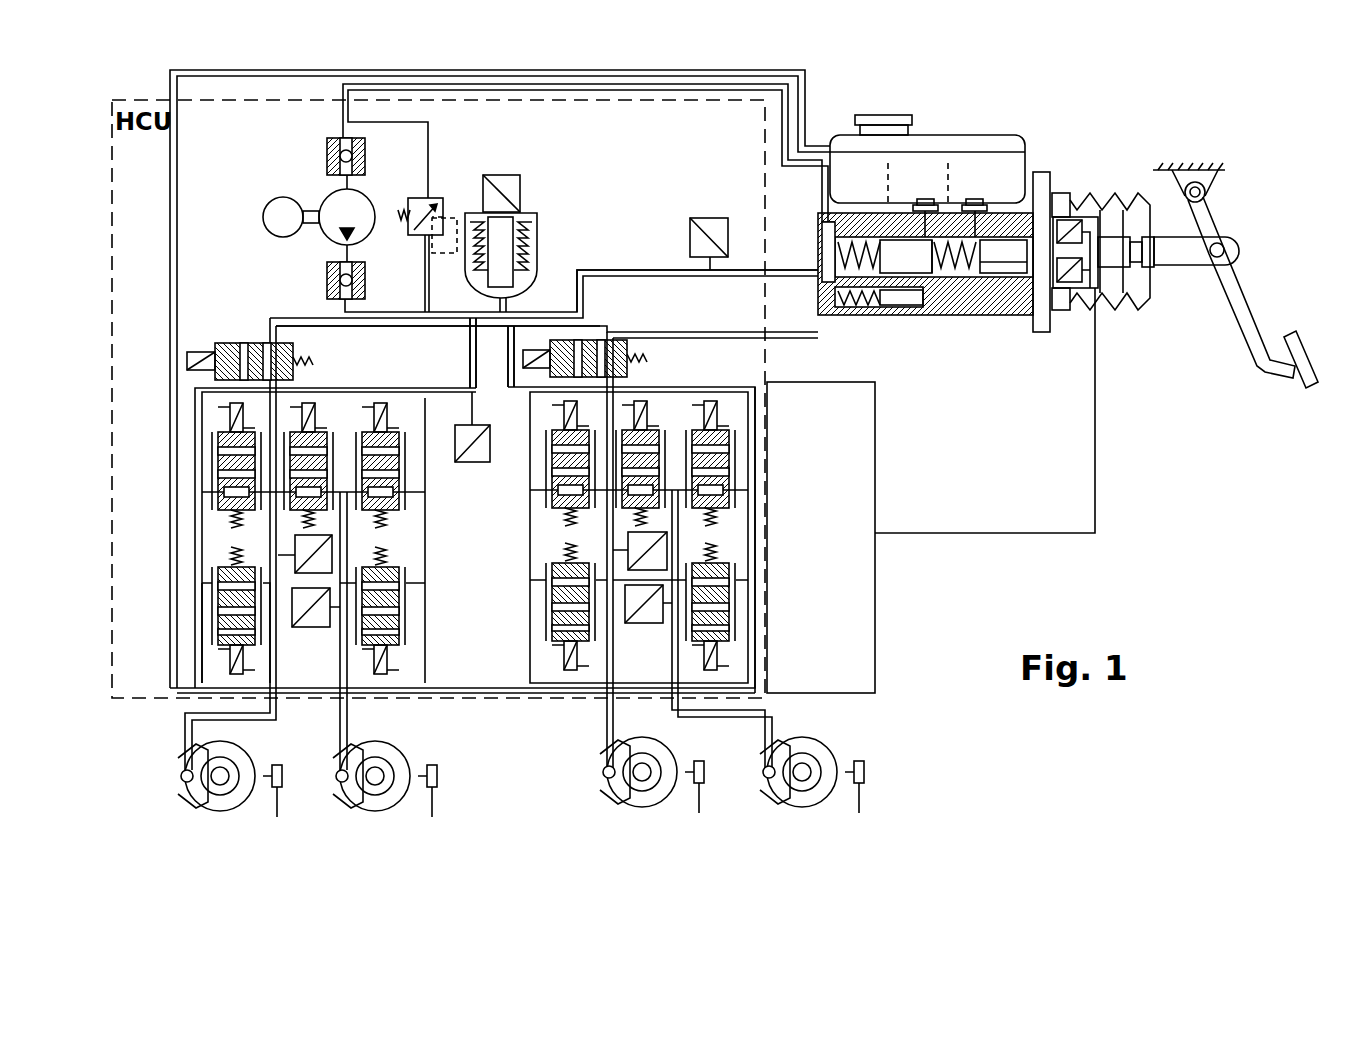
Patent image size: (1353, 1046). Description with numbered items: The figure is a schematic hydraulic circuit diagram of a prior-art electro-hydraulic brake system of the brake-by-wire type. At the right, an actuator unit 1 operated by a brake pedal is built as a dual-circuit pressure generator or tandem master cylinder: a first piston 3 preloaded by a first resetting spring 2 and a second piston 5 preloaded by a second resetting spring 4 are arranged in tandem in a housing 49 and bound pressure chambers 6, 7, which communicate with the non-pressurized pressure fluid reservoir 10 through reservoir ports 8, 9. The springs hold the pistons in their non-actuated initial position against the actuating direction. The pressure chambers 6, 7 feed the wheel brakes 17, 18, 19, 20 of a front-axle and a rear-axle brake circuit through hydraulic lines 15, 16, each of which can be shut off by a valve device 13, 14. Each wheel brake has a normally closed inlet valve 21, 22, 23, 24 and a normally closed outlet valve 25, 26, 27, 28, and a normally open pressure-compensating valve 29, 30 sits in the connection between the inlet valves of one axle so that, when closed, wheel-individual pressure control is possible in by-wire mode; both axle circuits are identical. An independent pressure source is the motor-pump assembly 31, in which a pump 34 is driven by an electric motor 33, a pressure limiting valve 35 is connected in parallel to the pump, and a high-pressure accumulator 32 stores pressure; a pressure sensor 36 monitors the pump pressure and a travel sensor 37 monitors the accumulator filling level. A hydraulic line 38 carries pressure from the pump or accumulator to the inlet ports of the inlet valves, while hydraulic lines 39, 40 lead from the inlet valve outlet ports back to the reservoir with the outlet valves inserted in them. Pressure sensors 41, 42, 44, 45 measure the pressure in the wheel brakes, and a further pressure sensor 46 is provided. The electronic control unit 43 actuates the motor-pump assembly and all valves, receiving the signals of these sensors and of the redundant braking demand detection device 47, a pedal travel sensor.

The actuator unit 1 is at (816, 206).
The first resetting spring 2 is at (960, 272).
The first piston 3 is at (1004, 272).
The second resetting spring 4 is at (853, 240).
The second piston 5 is at (897, 247).
The pressure chamber 6 is at (944, 272).
The pressure chamber 7 is at (840, 305).
The reservoir port 8 is at (973, 205).
The reservoir port 9 is at (925, 205).
The pressure fluid reservoir 10 is at (955, 178).
The valve device 13 is at (598, 326).
The valve device 14 is at (293, 349).
The hydraulic line 15 is at (660, 328).
The hydraulic line 16 is at (636, 270).
The wheel brake 17 is at (770, 798).
The wheel brake 18 is at (610, 800).
The wheel brake 19 is at (343, 804).
The wheel brake 20 is at (188, 804).
The inlet valve 21 is at (735, 468).
The inlet valve 22 is at (555, 497).
The inlet valve 23 is at (400, 435).
The inlet valve 24 is at (220, 500).
The outlet valve 25 is at (730, 606).
The outlet valve 26 is at (555, 610).
The outlet valve 27 is at (400, 572).
The outlet valve 28 is at (220, 574).
The pressure-compensating valve 29 is at (655, 430).
The pressure-compensating valve 30 is at (325, 432).
The motor-pump assembly 31 is at (312, 232).
The high-pressure accumulator 32 is at (530, 240).
The electric motor 33 is at (267, 207).
The pump 34 is at (358, 208).
The pressure limiting valve 35 is at (432, 198).
The pressure sensor 36 is at (458, 462).
The travel sensor 37 is at (520, 195).
The hydraulic line 38 is at (448, 388).
The hydraulic line 39 is at (527, 652).
The hydraulic line 40 is at (755, 650).
The pressure sensor 41 is at (632, 623).
The pressure sensor 42 is at (628, 540).
The electronic control unit 43 is at (860, 466).
The pressure sensor 44 is at (308, 627).
The pressure sensor 45 is at (295, 545).
The pressure sensor 46 is at (710, 218).
The braking demand detection device 47 is at (1068, 220).
The housing 49 is at (1022, 312).